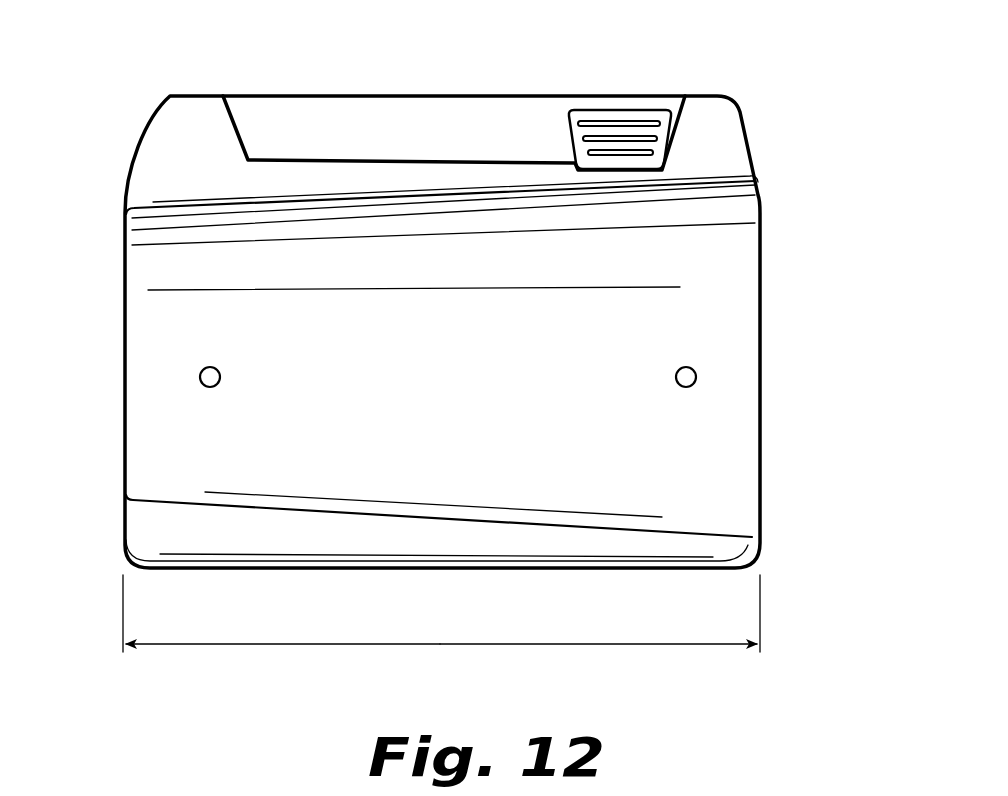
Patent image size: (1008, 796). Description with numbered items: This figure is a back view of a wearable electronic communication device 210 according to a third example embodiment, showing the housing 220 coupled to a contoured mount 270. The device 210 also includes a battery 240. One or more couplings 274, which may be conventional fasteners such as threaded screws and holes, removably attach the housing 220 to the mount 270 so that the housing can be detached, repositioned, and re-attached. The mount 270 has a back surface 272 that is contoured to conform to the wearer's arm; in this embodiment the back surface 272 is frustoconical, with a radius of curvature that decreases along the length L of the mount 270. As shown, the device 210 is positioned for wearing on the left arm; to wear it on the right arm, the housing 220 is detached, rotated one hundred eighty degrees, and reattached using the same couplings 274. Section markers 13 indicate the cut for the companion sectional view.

The wearable electronic communication device 210 is at (775, 128).
The housing 220 is at (766, 503).
The battery 240 is at (382, 92).
The mount 270 is at (270, 522).
The back surface 272 is at (436, 463).
The couplings 274 is at (196, 371).
The section line 13 is at (647, 85).
The length L is at (441, 629).